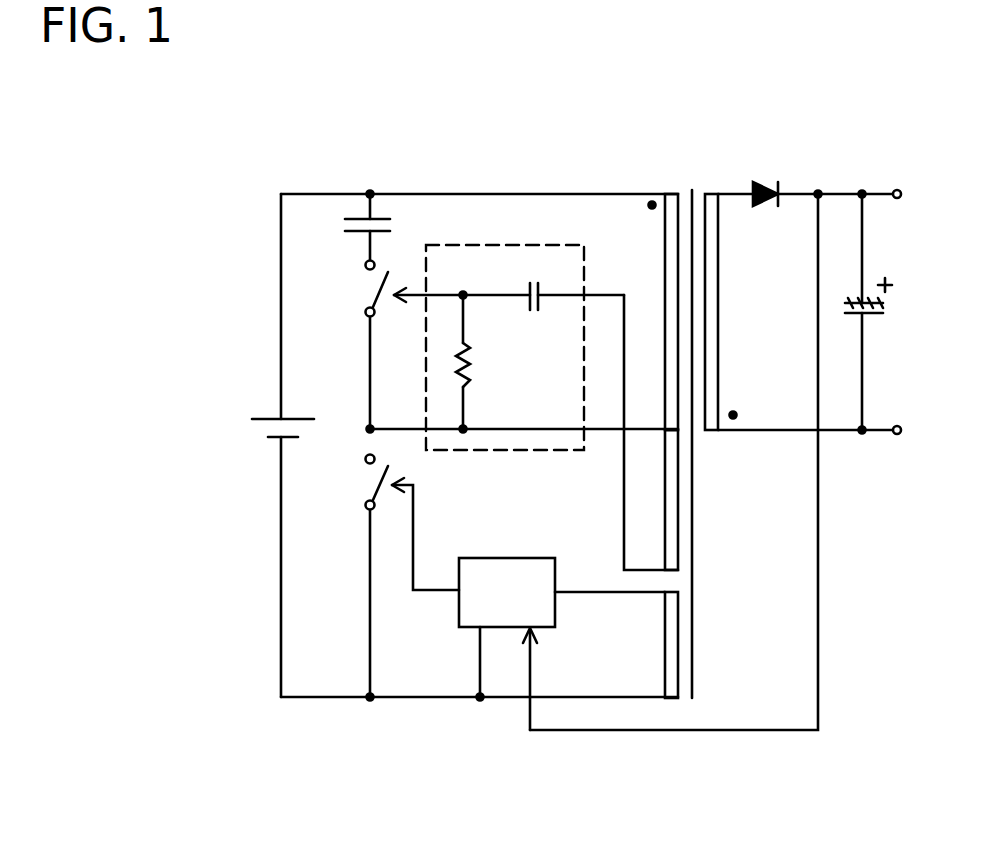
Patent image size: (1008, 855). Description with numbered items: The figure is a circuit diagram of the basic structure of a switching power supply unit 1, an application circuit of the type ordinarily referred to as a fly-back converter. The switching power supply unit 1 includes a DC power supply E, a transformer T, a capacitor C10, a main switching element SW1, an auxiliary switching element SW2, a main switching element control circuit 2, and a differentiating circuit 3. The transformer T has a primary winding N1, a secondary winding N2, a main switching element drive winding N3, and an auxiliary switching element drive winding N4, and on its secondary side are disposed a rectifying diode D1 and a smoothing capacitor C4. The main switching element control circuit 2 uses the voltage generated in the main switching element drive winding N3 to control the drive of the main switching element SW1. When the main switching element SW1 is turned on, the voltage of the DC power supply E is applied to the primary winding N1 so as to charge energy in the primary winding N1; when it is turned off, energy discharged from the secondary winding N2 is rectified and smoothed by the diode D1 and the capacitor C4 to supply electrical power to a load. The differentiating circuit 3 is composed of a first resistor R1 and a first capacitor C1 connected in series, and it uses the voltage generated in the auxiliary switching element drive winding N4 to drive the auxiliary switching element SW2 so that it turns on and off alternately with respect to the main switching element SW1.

The switching power supply unit 1 is at (753, 118).
The main switching element control circuit 2 is at (517, 572).
The differentiating circuit 3 is at (490, 270).
The DC power supply E is at (274, 411).
The capacitor C10 is at (338, 226).
The main switching element SW1 is at (383, 523).
The auxiliary switching element SW2 is at (383, 289).
The first resistor R1 is at (483, 362).
The first capacitor C1 is at (543, 283).
The transformer T is at (690, 429).
The primary winding N1 is at (651, 312).
The secondary winding N2 is at (731, 312).
The main switching element drive winding N3 is at (651, 645).
The auxiliary switching element drive winding N4 is at (650, 500).
The rectifying diode D1 is at (807, 179).
The smoothing capacitor C4 is at (884, 312).